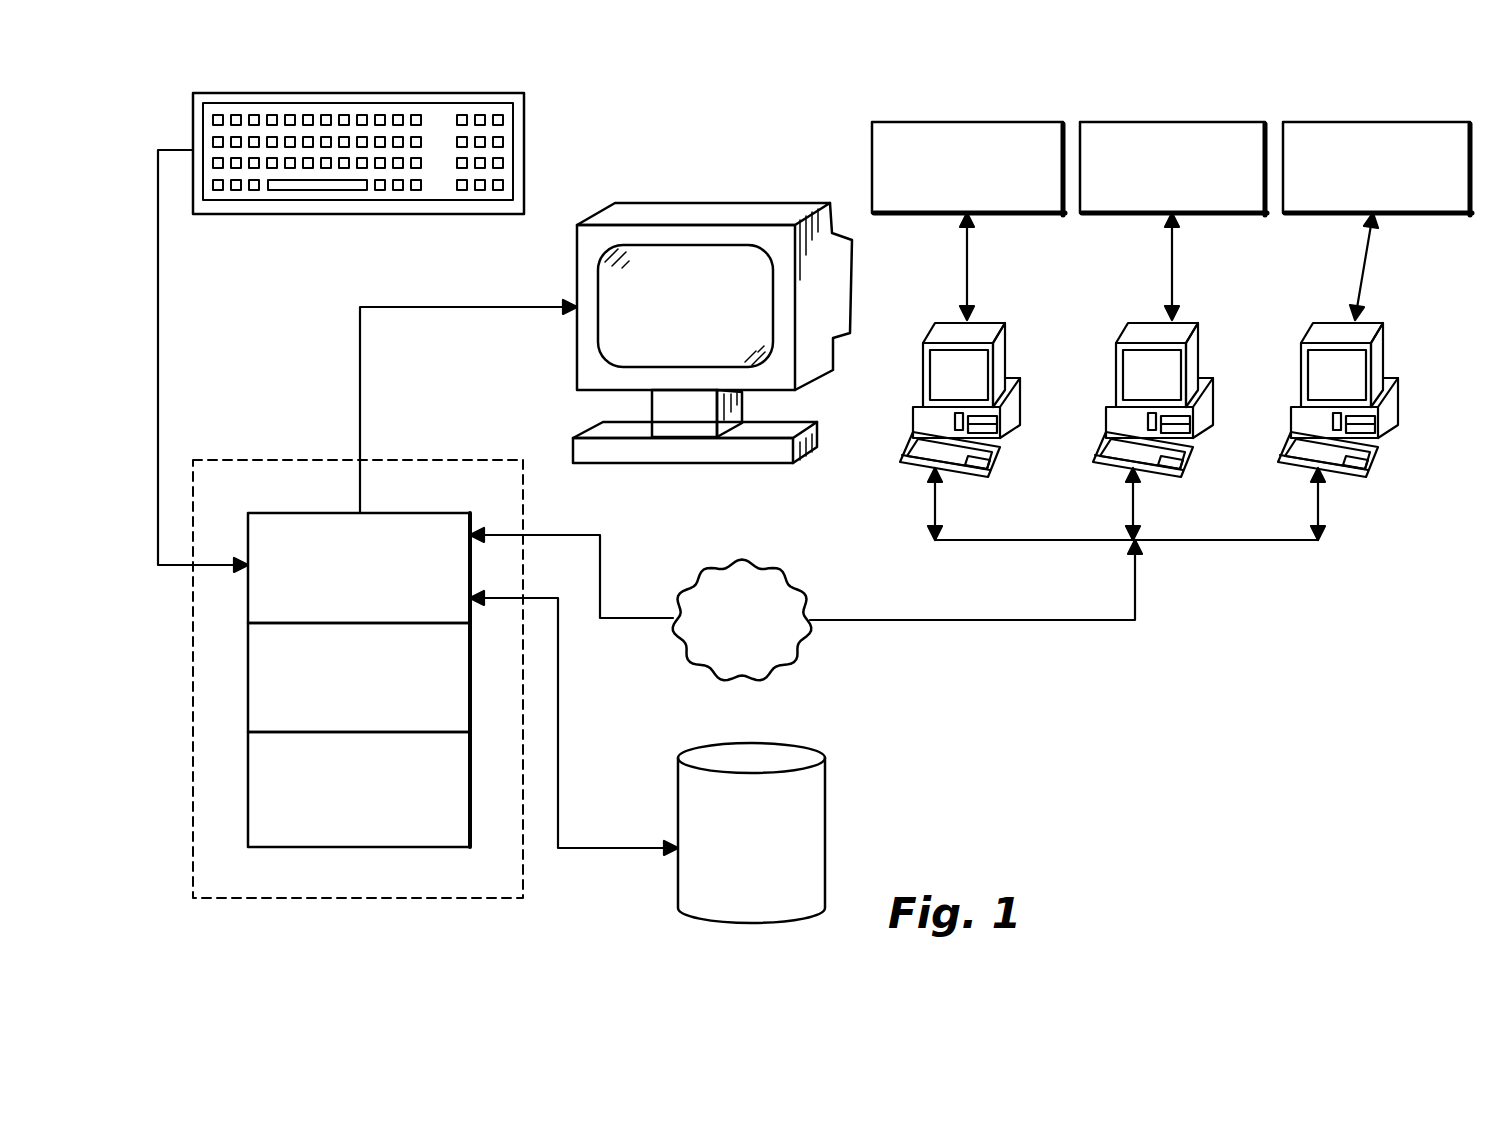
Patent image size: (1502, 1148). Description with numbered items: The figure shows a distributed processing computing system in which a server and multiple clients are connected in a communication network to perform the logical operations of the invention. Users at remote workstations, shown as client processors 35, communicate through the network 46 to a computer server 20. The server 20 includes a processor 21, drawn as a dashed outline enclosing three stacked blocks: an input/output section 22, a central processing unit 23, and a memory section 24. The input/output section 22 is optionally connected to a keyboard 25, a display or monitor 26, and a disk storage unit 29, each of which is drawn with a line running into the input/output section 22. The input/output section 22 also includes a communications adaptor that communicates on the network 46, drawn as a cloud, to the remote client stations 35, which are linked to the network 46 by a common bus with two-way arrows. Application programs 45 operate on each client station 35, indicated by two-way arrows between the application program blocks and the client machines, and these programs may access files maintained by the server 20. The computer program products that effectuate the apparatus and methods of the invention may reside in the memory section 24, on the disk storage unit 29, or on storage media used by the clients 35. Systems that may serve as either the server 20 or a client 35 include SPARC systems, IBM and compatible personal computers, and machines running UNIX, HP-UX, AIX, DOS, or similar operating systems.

The computer server 20 is at (708, 833).
The processor 21 is at (333, 458).
The input/output section 22 is at (315, 513).
The central processing unit 23 is at (470, 693).
The memory section 24 is at (470, 808).
The keyboard 25 is at (527, 182).
The display or monitor 26 is at (656, 210).
The disk storage unit 29 is at (693, 873).
The client processors 35 is at (990, 377).
The application programs 45 is at (993, 213).
The network 46 is at (745, 590).